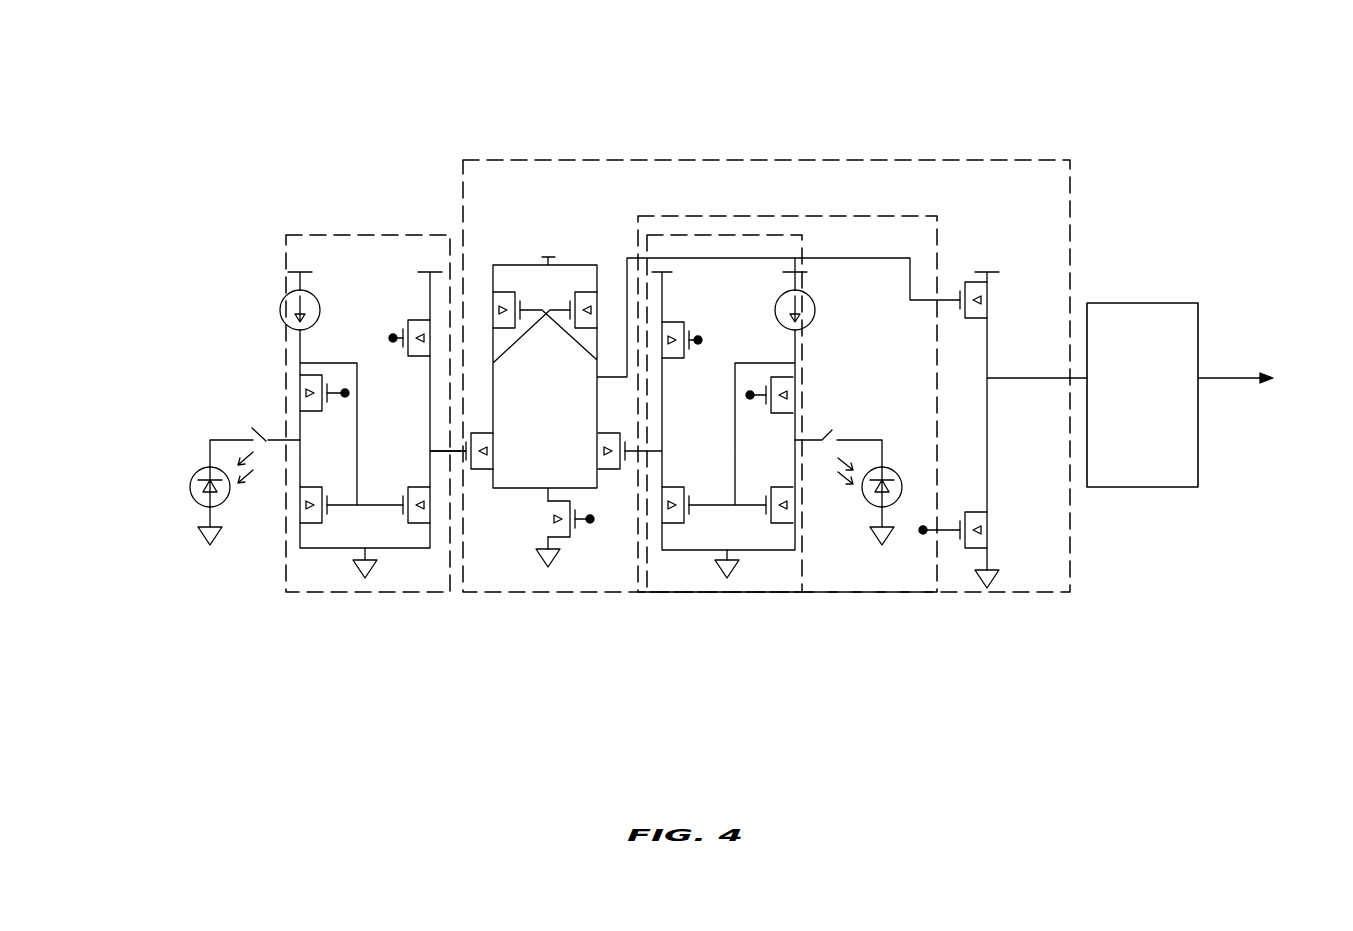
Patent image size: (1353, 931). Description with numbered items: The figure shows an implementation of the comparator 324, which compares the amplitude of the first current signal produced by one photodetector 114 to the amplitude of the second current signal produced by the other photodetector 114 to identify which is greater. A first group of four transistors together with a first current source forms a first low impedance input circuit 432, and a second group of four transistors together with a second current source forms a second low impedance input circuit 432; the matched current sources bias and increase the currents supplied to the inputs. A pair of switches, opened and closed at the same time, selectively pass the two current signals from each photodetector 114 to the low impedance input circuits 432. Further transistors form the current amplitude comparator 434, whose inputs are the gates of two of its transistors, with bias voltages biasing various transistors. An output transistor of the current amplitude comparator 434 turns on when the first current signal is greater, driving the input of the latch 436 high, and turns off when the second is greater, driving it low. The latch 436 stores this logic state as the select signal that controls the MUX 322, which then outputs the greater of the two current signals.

The comparator 324 is at (752, 46).
The current amplitude comparator 434 is at (780, 158).
The low impedance input circuit 432 is at (813, 231).
The latch 436 is at (1125, 303).
The MUX 322 is at (1263, 375).
The photodetector 114 is at (852, 493).